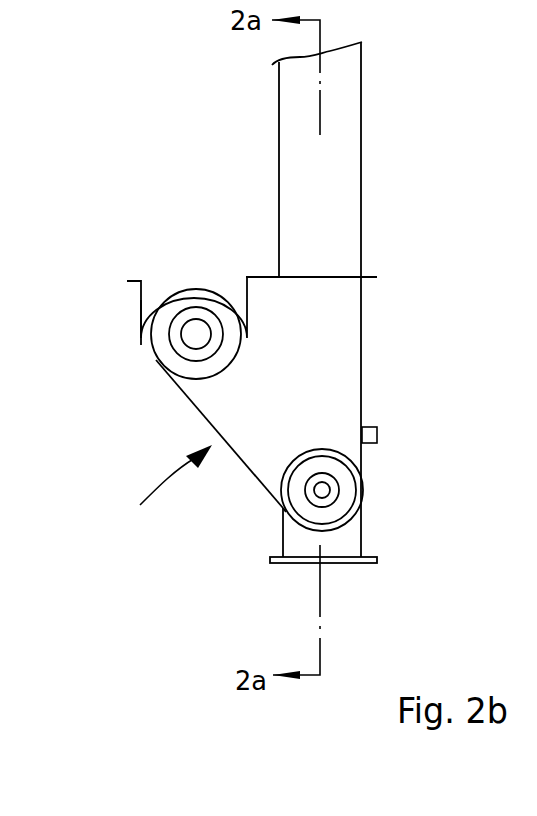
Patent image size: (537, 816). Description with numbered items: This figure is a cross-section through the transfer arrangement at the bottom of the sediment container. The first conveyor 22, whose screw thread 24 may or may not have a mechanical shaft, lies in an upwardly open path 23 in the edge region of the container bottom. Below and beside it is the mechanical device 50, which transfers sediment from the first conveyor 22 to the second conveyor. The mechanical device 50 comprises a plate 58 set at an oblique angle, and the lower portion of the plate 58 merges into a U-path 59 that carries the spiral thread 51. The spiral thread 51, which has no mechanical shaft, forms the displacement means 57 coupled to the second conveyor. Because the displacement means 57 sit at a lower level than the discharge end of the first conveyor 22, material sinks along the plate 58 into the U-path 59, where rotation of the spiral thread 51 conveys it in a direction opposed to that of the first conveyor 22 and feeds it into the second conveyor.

The first conveyor 22 is at (143, 322).
The upwardly open path 23 is at (141, 346).
The screw thread 24 is at (180, 289).
The mechanical device 50 is at (157, 488).
The spiral thread 51 is at (340, 474).
The displacement means 57 is at (362, 507).
The plate 58 is at (205, 417).
The U-path 59 is at (300, 516).